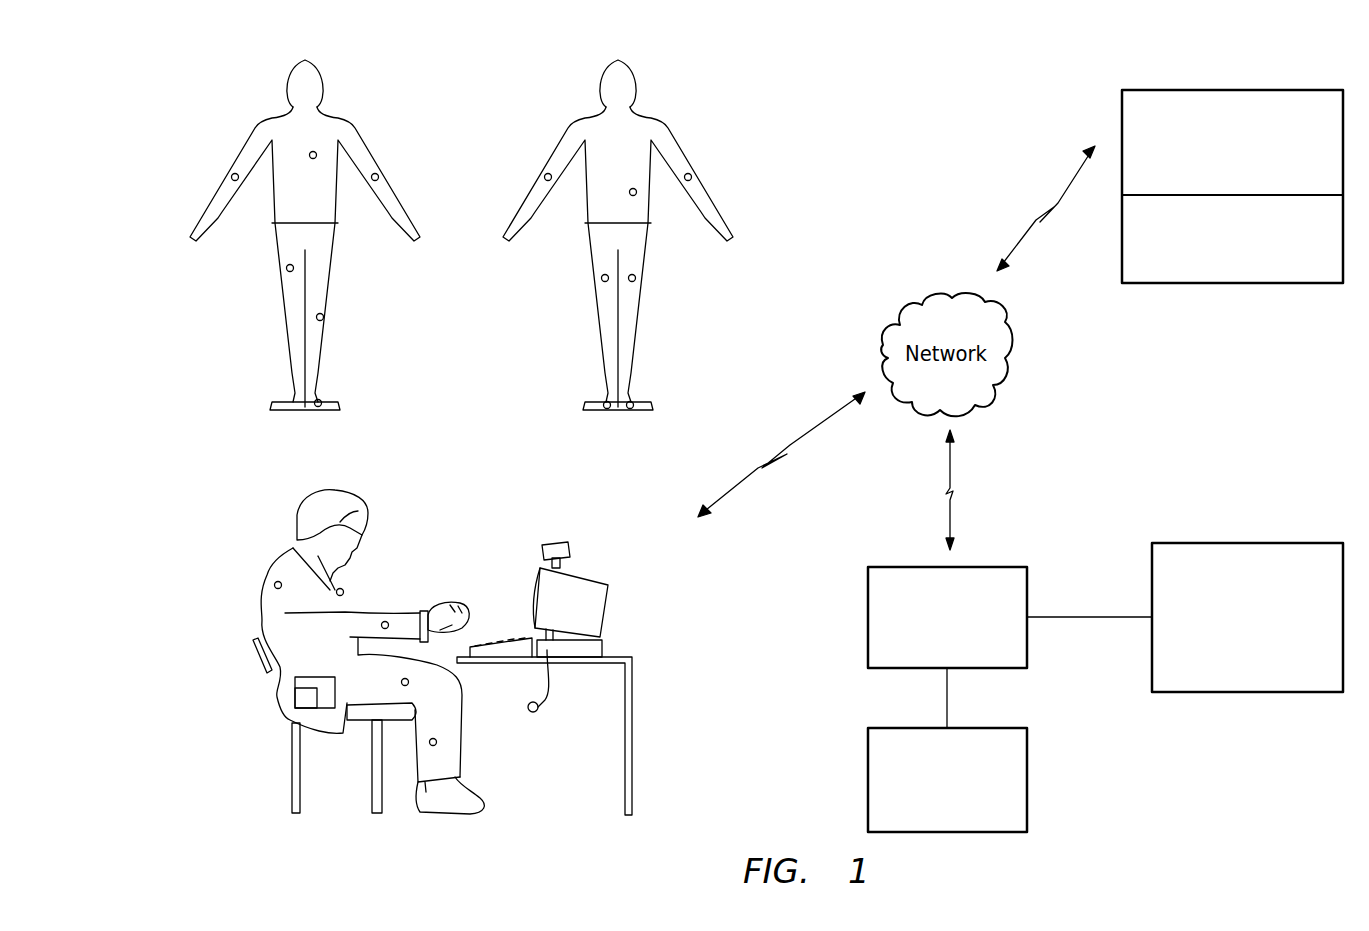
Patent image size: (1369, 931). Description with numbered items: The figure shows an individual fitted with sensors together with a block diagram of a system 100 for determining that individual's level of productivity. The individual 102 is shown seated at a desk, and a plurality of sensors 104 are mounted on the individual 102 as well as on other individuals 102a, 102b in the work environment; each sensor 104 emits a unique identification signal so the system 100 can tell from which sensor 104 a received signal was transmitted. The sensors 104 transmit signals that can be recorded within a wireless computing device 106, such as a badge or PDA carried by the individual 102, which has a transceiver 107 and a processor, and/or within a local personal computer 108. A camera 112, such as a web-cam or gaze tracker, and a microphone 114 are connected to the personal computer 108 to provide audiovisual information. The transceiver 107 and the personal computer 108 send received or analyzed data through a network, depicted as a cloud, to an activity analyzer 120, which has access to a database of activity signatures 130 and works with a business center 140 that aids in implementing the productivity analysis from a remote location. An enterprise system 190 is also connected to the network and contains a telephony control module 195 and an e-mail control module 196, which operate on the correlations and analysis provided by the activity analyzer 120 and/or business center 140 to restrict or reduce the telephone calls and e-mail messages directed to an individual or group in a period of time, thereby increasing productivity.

The system 100 is at (925, 117).
The individual 102 is at (266, 617).
The other individual 102a is at (650, 101).
The other individual 102b is at (340, 101).
The sensors 104 is at (316, 153).
The wireless computing device 106 is at (295, 680).
The transceiver 107 is at (288, 717).
The personal computer 108 is at (617, 617).
The camera 112 is at (572, 550).
The microphone 114 is at (537, 713).
The activity analyzer 120 is at (1000, 566).
The database of activity signatures 130 is at (1248, 542).
The business center 140 is at (1028, 775).
The enterprise system 190 is at (1232, 224).
The telephony control module 195 is at (1330, 183).
The e-mail control module 196 is at (1330, 267).